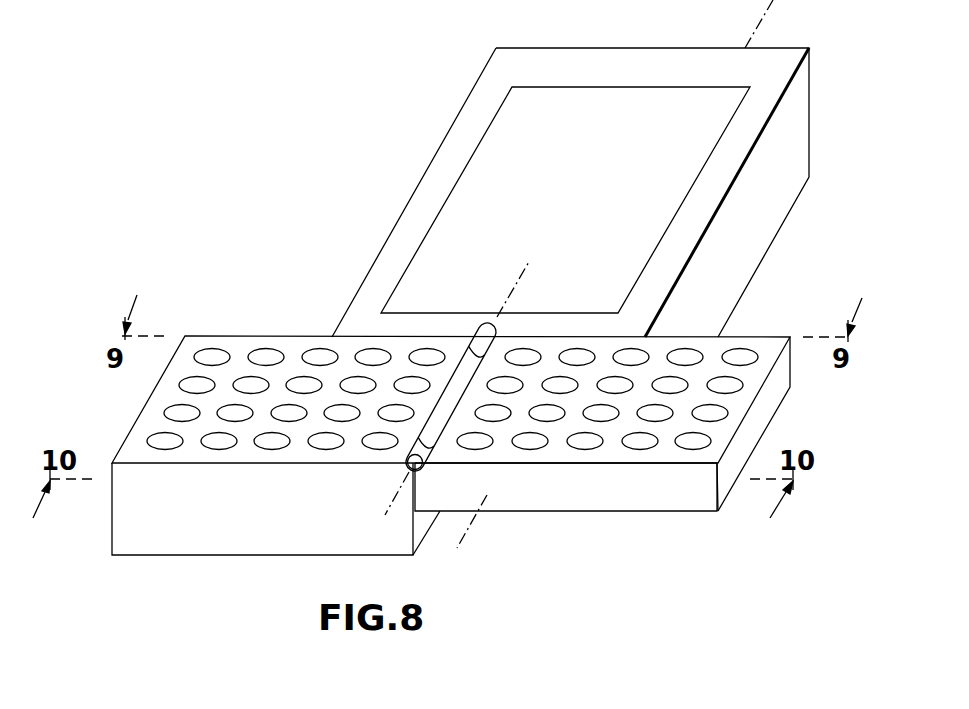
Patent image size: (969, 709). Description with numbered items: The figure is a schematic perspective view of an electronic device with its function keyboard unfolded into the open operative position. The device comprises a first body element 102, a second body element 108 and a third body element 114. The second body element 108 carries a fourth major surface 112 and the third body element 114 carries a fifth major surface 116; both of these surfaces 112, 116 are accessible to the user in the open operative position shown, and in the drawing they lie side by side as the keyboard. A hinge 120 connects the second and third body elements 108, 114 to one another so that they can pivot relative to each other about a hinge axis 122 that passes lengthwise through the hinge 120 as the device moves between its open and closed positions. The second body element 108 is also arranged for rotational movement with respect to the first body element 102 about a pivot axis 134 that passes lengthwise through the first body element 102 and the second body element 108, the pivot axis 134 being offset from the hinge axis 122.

The first body element 102 is at (598, 48).
The fifth major surface 116 is at (235, 343).
The fourth major surface 112 is at (747, 329).
The third body element 114 is at (235, 547).
The second body element 108 is at (638, 503).
The hinge 120 is at (443, 419).
The hinge axis 122 is at (397, 497).
The pivot axis 134 is at (465, 532).